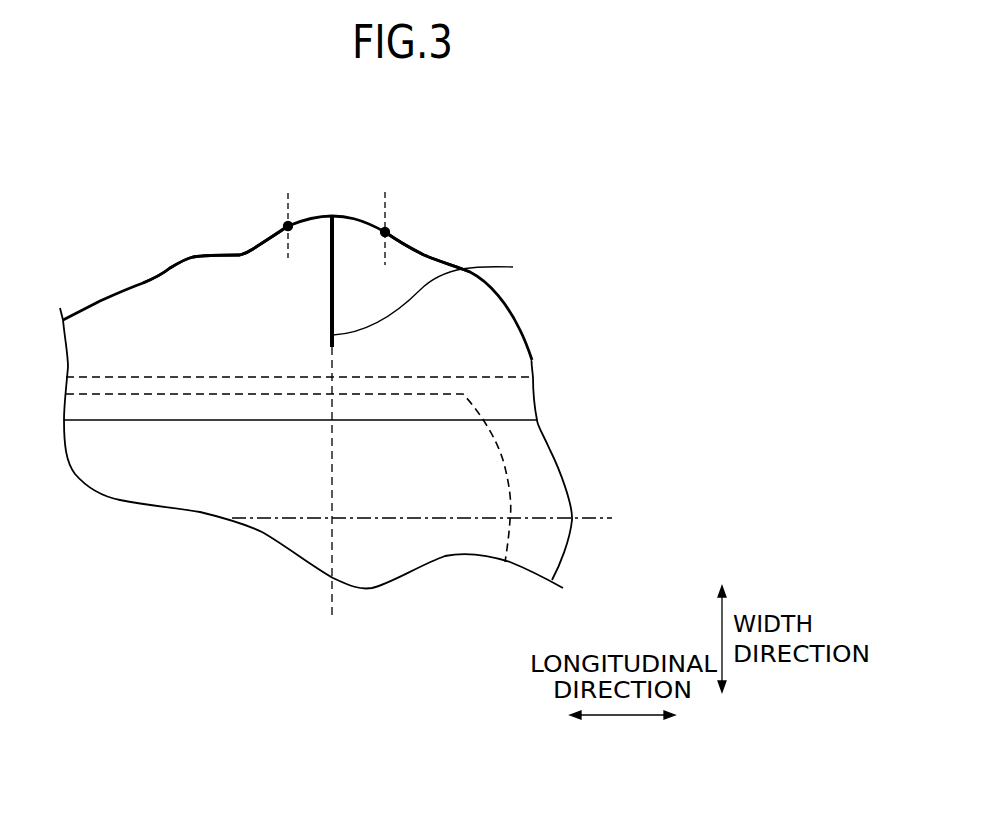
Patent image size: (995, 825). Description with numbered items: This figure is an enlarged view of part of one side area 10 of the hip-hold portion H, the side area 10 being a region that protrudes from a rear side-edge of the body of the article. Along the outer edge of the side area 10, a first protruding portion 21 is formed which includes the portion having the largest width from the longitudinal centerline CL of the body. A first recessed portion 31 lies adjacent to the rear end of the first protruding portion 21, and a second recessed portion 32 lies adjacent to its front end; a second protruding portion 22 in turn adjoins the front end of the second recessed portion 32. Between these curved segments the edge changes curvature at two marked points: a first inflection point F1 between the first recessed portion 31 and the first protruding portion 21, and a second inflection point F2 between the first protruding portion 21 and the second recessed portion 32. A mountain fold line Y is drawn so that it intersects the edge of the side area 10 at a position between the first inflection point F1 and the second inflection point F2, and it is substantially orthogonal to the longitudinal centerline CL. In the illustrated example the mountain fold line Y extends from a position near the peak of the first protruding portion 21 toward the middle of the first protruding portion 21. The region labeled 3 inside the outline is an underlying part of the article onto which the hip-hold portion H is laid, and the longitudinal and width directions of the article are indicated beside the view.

The side area 10 is at (155, 318).
The second protruding portion 22 is at (193, 258).
The second recessed portion 32 is at (253, 248).
The first protruding portion 21 is at (330, 216).
The first recessed portion 31 is at (424, 256).
The absorbent body region 3 is at (409, 480).
The first inflection point F1 is at (386, 231).
The second inflection point F2 is at (288, 226).
The hip-hold portion H is at (139, 210).
The mountain fold line Y is at (432, 295).
The longitudinal centerline CL is at (437, 520).